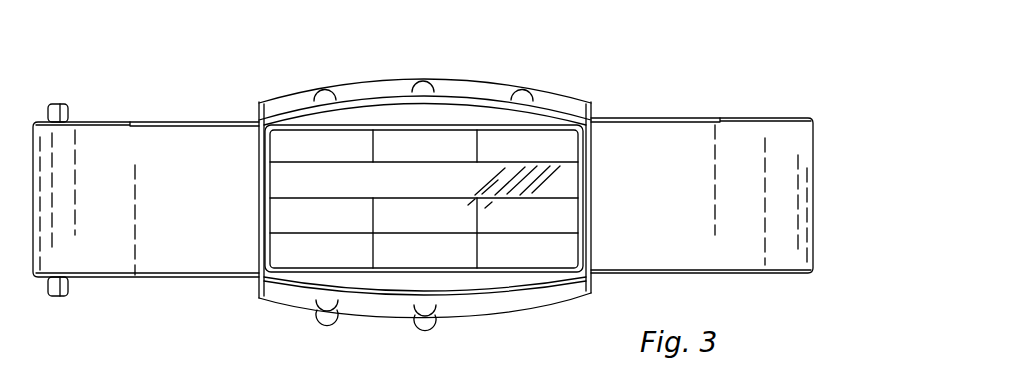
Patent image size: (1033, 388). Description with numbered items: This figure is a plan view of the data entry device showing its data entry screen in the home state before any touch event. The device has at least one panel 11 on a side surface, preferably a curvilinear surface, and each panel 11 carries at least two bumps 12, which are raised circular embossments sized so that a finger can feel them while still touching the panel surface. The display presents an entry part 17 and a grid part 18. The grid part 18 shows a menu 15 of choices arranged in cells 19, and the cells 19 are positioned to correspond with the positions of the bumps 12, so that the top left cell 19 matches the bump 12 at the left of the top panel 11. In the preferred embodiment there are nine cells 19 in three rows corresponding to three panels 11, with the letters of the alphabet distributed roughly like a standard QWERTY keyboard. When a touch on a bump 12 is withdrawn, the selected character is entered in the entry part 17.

The panel 11 is at (283, 100).
The bumps 12 is at (327, 300).
The menu 15 is at (460, 243).
The entry part 17 is at (563, 173).
The grid part 18 is at (570, 247).
The cells 19 is at (277, 248).